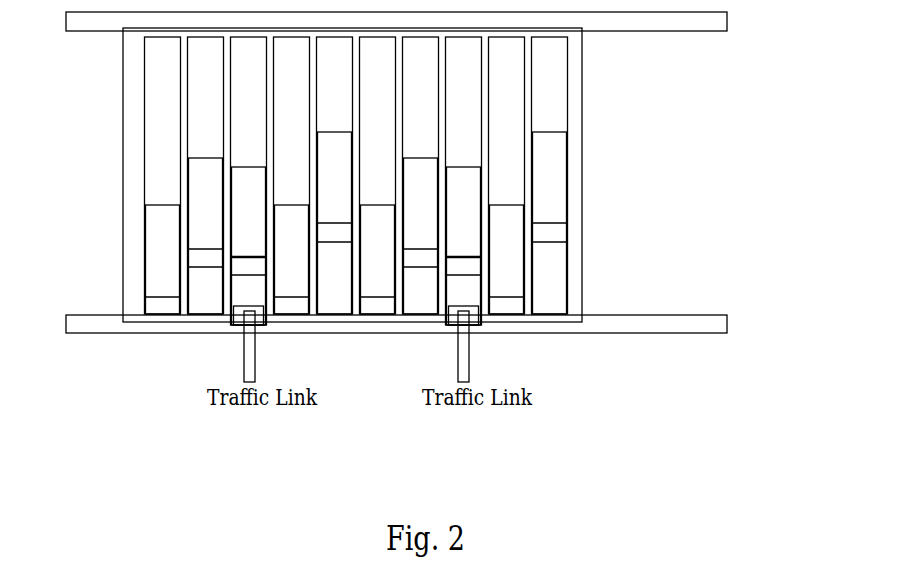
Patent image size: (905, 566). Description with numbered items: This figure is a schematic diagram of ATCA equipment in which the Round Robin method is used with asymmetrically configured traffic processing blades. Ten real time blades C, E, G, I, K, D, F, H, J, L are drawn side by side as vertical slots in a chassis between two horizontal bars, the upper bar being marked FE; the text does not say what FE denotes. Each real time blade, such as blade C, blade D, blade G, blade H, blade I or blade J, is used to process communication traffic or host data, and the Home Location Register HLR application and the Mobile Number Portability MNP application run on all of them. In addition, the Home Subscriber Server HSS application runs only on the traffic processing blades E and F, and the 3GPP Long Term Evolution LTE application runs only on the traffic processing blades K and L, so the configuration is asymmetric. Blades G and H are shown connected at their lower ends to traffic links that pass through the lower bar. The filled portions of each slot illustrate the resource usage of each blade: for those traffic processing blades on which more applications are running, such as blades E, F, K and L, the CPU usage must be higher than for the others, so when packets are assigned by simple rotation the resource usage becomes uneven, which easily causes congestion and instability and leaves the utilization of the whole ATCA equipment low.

The front end backplane FE is at (420, 172).
The real time blade C is at (163, 175).
The real time blade E is at (206, 175).
The real time blade G is at (249, 209).
The real time blade I is at (292, 175).
The real time blade K is at (335, 175).
The real time blade D is at (378, 175).
The real time blade F is at (421, 175).
The real time blade H is at (464, 209).
The real time blade J is at (507, 175).
The real time blade L is at (550, 175).